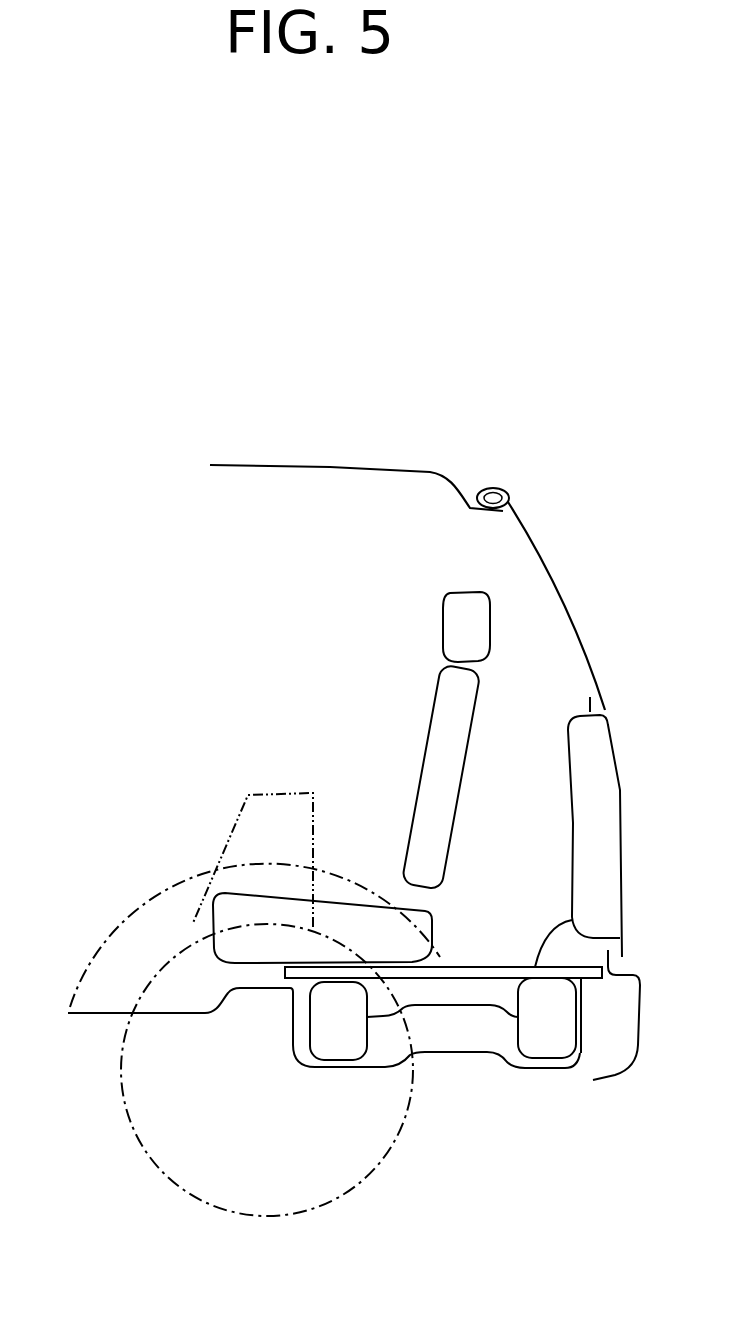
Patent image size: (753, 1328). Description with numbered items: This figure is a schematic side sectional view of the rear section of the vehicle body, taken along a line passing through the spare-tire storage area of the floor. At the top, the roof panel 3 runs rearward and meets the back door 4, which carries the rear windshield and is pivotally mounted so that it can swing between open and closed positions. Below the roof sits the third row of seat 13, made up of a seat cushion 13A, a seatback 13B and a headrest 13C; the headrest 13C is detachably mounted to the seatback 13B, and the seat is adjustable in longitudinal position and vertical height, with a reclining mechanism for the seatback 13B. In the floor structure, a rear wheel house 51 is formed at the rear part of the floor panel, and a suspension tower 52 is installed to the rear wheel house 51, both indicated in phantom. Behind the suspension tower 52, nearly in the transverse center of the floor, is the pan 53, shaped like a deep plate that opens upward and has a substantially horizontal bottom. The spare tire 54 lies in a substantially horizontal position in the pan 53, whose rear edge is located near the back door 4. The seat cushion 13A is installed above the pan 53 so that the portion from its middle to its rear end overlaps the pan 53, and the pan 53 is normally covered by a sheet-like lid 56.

The roof panel 3 is at (280, 463).
The back door 4 is at (610, 655).
The third row of seat 13 is at (398, 765).
The seat cushion 13A is at (437, 915).
The seatback 13B is at (445, 778).
The headrest 13C is at (470, 633).
The rear wheel house 51 is at (150, 923).
The suspension tower 52 is at (303, 793).
The pan 53 is at (505, 1070).
The spare tire 54 is at (555, 1042).
The lid 56 is at (572, 920).